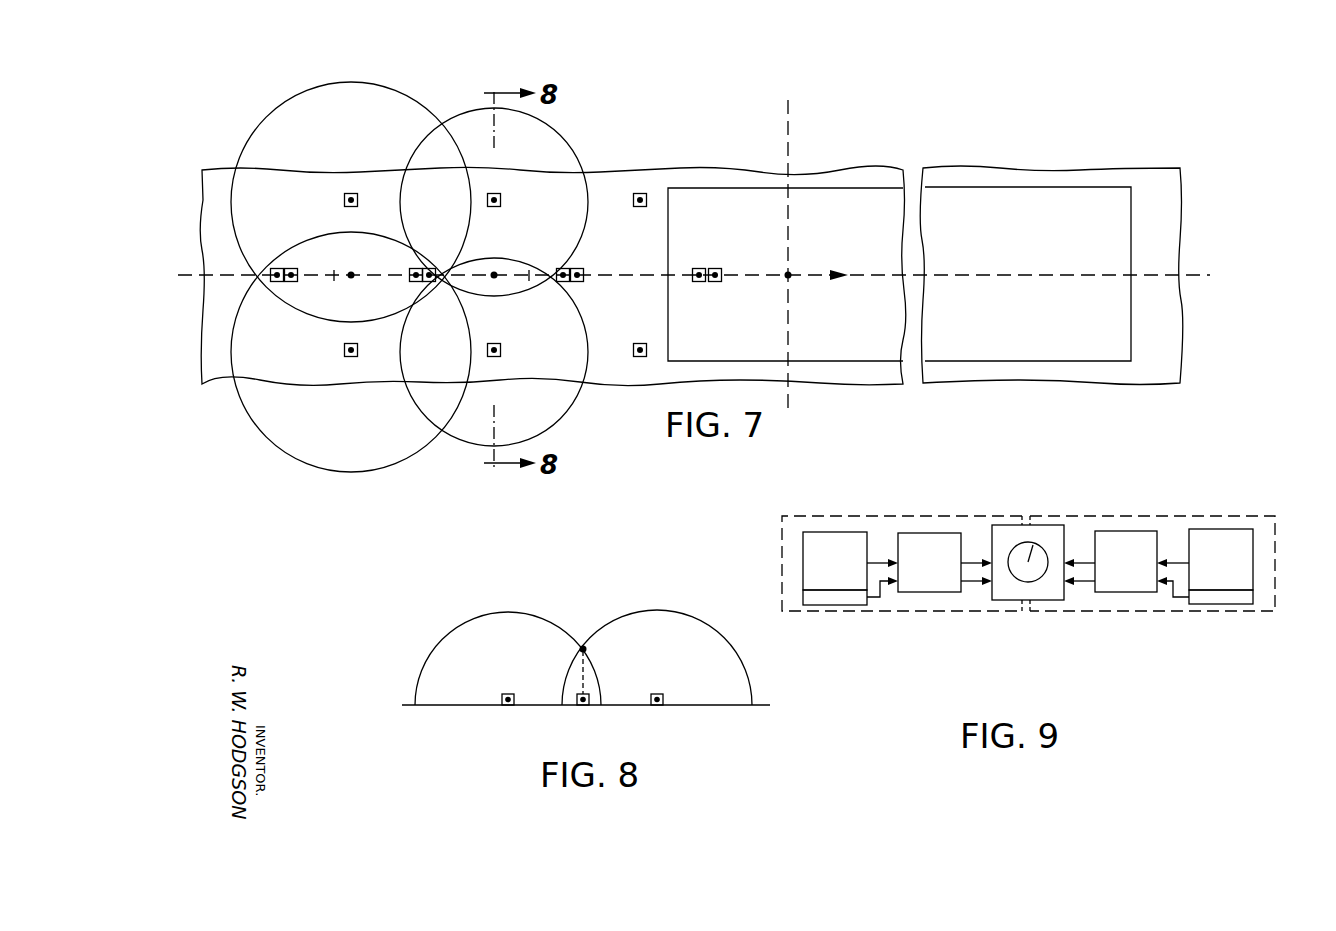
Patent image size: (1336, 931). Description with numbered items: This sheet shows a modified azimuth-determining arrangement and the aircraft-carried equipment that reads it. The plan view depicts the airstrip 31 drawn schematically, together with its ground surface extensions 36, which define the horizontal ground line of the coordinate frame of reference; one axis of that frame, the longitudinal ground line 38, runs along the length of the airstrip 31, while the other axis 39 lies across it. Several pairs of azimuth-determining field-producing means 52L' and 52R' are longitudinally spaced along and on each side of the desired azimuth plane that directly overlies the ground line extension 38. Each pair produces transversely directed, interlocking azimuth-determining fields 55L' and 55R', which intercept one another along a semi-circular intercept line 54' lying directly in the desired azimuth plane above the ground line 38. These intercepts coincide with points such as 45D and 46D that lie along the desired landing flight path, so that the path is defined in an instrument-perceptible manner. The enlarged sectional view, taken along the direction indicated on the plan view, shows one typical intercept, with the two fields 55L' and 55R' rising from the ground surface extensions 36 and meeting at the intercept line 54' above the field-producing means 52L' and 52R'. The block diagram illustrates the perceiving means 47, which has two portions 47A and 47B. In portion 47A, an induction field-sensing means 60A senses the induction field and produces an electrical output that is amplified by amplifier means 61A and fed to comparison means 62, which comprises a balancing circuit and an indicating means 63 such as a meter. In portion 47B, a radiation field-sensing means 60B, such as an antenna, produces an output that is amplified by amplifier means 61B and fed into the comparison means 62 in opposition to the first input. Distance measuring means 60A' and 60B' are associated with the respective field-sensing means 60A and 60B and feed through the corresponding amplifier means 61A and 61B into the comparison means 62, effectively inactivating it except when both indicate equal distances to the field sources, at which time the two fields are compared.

In FIG. 7, the airstrip 31 is at (726, 324).
In FIG. 7, the ground surface extensions 36 is at (232, 259).
In FIG. 8, the ground surface extensions 36 is at (692, 707).
In FIG. 7, the longitudinal ground line 38 is at (215, 281).
In FIG. 7, the transverse axis 39 is at (792, 128).
In FIG. 7, the flight path point 45D is at (353, 273).
In FIG. 7, the flight path point 46D is at (497, 272).
In FIG. 8, the flight path point 46D is at (583, 646).
In FIG. 7, the azimuth-determining field-producing means 52L' is at (421, 201).
In FIG. 8, the azimuth-determining field-producing means 52L' is at (488, 683).
In FIG. 7, the azimuth-determining field-producing means 52R' is at (419, 350).
In FIG. 8, the azimuth-determining field-producing means 52R' is at (680, 683).
In FIG. 7, the semi-circular intercept line 54' is at (443, 296).
In FIG. 8, the semi-circular intercept line 54' is at (609, 674).
In FIG. 7, the azimuth-determining field 55L' is at (420, 202).
In FIG. 8, the azimuth-determining field 55L' is at (508, 648).
In FIG. 7, the azimuth-determining field 55R' is at (411, 352).
In FIG. 8, the azimuth-determining field 55R' is at (671, 657).
In FIG. 9, the perceiving means 47 is at (1040, 620).
In FIG. 9, the perceiving portion 47A is at (862, 514).
In FIG. 9, the perceiving portion 47B is at (1192, 514).
In FIG. 9, the induction field-sensing means 60A is at (765, 532).
In FIG. 9, the distance measuring means 60A' is at (763, 575).
In FIG. 9, the radiation field-sensing means 60B is at (1178, 622).
In FIG. 9, the distance measuring means 60B' is at (1252, 626).
In FIG. 9, the amplifier means 61A is at (927, 612).
In FIG. 9, the amplifier means 61B is at (1107, 612).
In FIG. 9, the comparison means 62 is at (1057, 497).
In FIG. 9, the indicating means 63 is at (1016, 557).